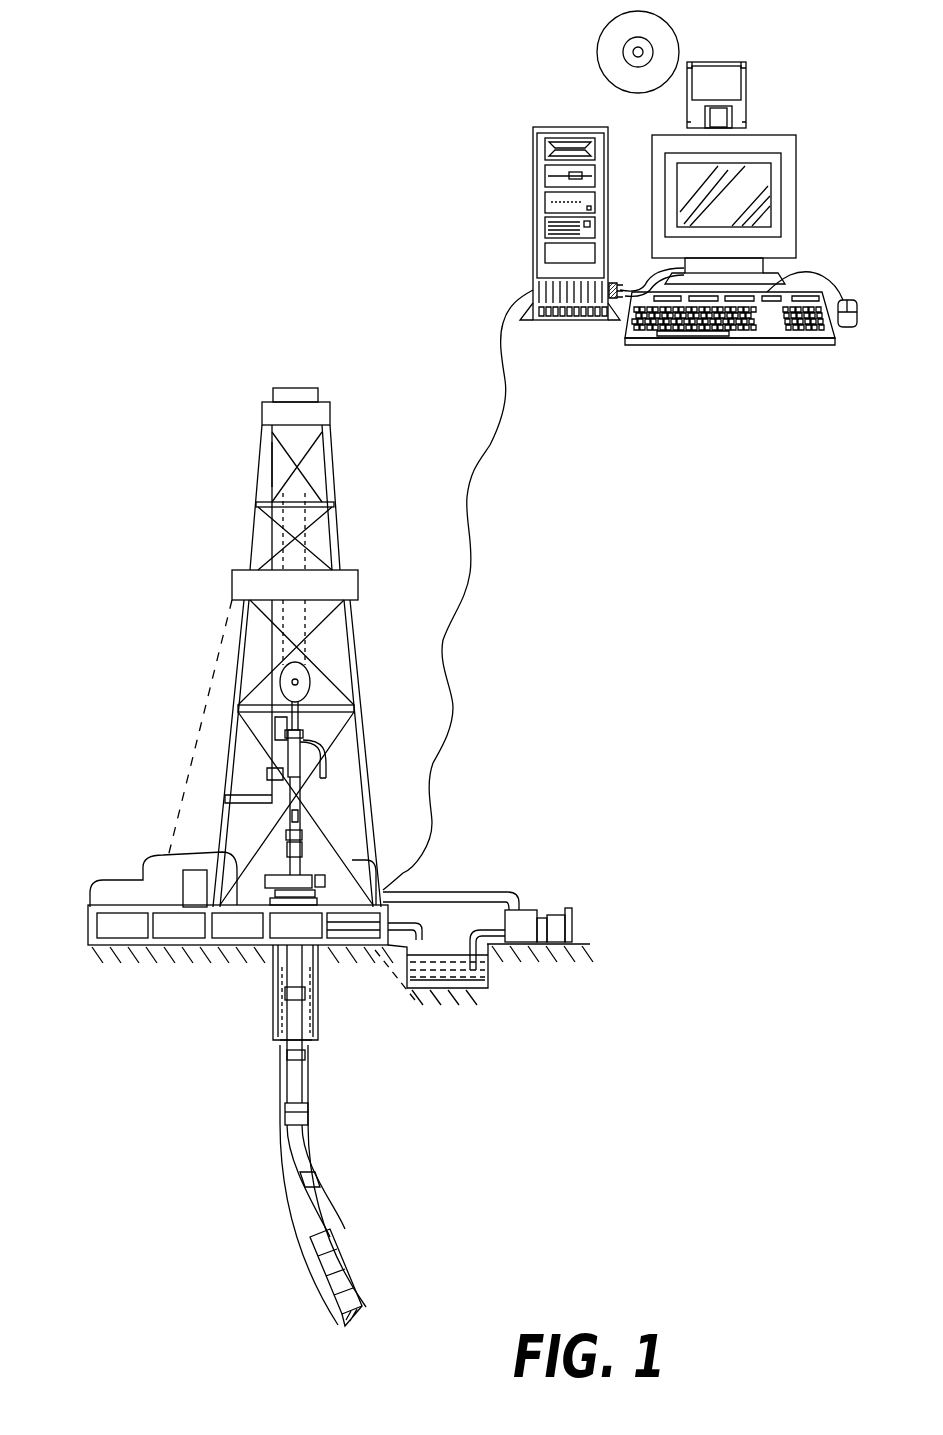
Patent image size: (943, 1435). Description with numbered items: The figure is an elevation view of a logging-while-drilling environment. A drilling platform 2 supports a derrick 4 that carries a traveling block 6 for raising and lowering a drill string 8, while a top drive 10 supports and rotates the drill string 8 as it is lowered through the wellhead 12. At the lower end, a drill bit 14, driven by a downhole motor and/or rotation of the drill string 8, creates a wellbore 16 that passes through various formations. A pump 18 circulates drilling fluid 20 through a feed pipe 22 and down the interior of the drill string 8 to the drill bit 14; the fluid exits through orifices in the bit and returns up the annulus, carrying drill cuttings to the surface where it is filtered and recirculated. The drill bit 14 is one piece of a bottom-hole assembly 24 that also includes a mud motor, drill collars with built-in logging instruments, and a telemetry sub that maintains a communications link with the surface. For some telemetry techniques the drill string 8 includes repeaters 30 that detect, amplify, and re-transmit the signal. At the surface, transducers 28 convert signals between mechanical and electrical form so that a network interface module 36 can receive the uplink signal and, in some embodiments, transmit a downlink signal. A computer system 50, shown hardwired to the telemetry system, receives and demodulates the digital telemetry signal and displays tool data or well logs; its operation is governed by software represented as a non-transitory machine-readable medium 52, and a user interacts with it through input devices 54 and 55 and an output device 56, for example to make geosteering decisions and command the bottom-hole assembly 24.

The drilling platform 2 is at (88, 917).
The derrick 4 is at (342, 540).
The traveling block 6 is at (305, 678).
The drill string 8 is at (298, 1090).
The top drive 10 is at (300, 752).
The wellhead 12 is at (317, 872).
The drill bit 14 is at (357, 1290).
The wellbore 16 is at (315, 1097).
The pump 18 is at (522, 912).
The drilling fluid 20 is at (410, 982).
The feed pipe 22 is at (458, 892).
The bottom-hole assembly 24 is at (335, 1317).
The transducers 28 is at (300, 812).
The repeaters 30 is at (283, 1120).
The network interface module 36 is at (197, 875).
The computer system 50 is at (608, 220).
The non-transitory machine-readable medium 52 is at (708, 62).
The input device 54 is at (782, 348).
The input device 55 is at (857, 312).
The output device 56 is at (797, 220).